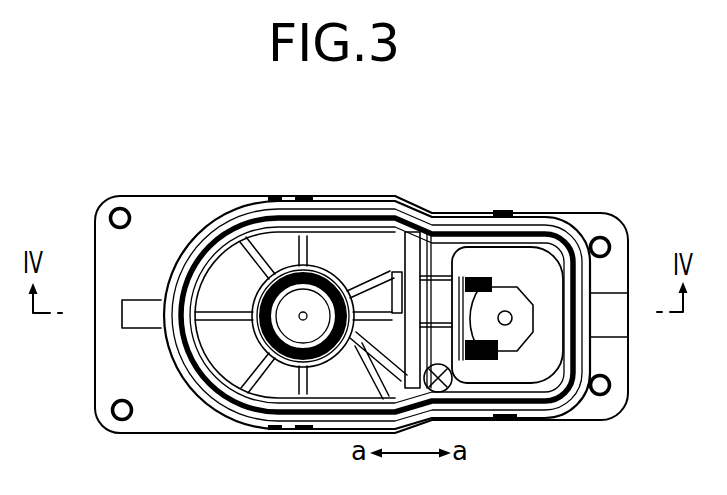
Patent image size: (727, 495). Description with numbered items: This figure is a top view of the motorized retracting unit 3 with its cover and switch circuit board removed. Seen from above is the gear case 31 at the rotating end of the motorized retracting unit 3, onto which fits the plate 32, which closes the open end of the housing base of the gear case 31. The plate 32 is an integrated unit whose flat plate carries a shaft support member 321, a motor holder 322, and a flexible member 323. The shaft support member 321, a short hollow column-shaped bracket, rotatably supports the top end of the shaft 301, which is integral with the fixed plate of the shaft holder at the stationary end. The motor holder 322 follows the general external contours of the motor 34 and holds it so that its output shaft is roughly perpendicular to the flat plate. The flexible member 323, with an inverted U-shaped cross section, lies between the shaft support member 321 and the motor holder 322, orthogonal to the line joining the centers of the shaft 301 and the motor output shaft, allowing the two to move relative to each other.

The motorized retracting unit 3 is at (639, 226).
The gear case 31 is at (630, 381).
The plate 32 is at (352, 247).
The shaft 301 is at (280, 263).
The shaft support member 321 is at (326, 262).
The motor holder 322 is at (520, 273).
The flexible member 323 is at (433, 255).
The motor 34 is at (533, 258).